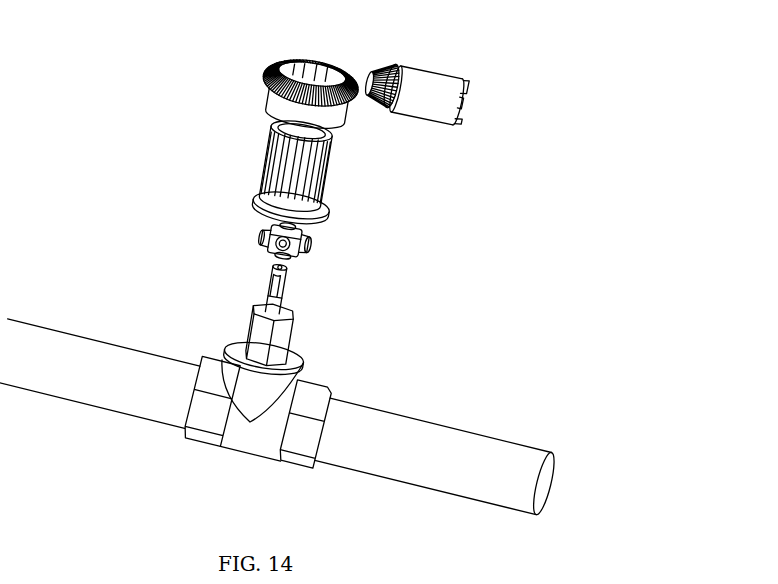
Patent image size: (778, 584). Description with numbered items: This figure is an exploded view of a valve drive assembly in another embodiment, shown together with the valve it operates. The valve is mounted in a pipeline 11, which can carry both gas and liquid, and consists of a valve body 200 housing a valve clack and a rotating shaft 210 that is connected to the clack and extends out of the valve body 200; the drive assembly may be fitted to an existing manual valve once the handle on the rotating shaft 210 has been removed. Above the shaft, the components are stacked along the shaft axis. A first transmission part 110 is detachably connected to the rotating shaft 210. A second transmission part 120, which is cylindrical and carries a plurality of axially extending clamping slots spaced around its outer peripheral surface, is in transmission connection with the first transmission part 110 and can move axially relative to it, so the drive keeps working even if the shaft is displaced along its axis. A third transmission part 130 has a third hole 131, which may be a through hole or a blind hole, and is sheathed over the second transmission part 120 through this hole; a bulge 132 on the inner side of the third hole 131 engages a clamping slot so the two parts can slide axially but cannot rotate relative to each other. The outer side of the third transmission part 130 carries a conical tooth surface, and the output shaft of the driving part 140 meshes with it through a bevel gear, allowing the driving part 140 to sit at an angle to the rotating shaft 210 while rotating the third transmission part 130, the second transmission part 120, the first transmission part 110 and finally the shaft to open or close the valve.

The pipeline 11 is at (92, 360).
The first transmission part 110 is at (307, 247).
The second transmission part 120 is at (275, 170).
The third transmission part 130 is at (236, 77).
The third hole 131 is at (283, 115).
The bulge 132 is at (300, 63).
The driving part 140 is at (432, 106).
The valve body 200 is at (263, 435).
The rotating shaft 210 is at (287, 282).